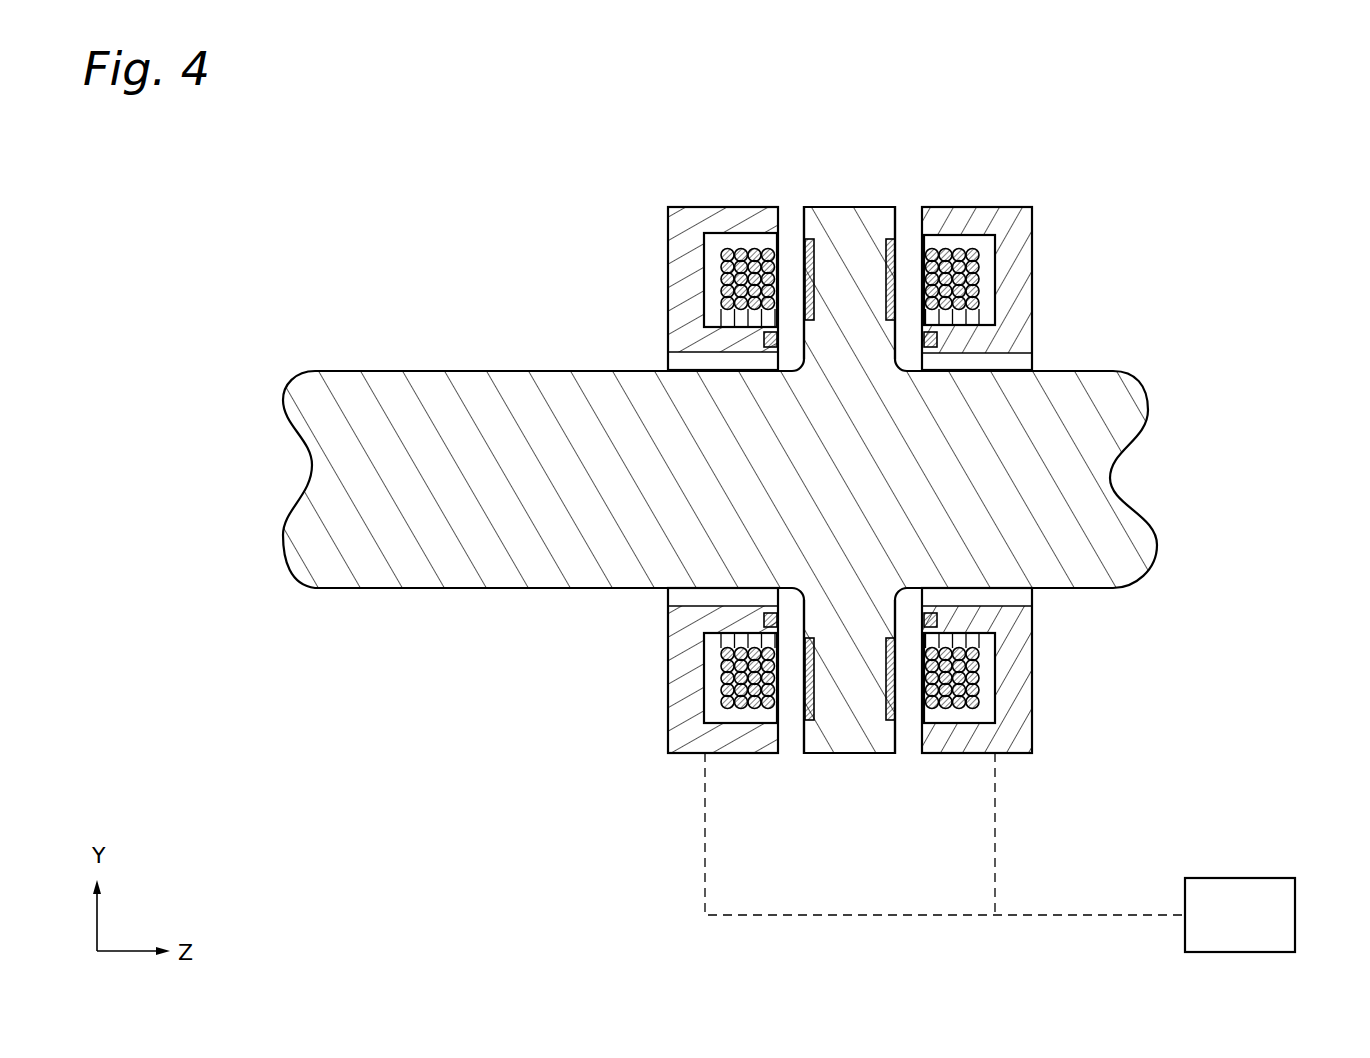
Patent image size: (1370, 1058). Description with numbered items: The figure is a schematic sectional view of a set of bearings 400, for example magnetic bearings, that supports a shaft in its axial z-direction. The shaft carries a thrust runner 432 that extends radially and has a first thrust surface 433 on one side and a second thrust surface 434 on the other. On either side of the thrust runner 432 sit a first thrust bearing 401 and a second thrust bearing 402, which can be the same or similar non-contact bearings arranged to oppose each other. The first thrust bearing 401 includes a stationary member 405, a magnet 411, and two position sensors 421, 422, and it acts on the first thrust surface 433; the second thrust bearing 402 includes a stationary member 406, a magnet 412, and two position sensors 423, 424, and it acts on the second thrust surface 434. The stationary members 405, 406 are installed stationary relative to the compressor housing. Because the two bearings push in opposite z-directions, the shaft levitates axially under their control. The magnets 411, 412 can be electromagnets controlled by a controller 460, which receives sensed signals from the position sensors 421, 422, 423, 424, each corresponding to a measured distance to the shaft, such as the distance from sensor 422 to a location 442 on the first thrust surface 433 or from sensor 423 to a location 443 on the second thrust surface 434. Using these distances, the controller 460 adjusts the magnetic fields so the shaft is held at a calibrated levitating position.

The set of bearings 400 is at (814, 512).
The first thrust bearing 401 is at (1035, 265).
The second thrust bearing 402 is at (682, 254).
The stationary member 405 is at (1033, 317).
The stationary member 406 is at (668, 313).
The magnet 411 is at (977, 273).
The magnet 412 is at (722, 275).
The position sensor 421 is at (937, 338).
The position sensor 422 is at (937, 619).
The position sensor 423 is at (764, 619).
The position sensor 424 is at (764, 338).
The thrust runner 432 is at (837, 207).
The first thrust surface 433 is at (898, 222).
The second thrust surface 434 is at (802, 218).
The location on the first thrust surface 442 is at (900, 590).
The location on the second thrust surface 443 is at (780, 590).
The controller 460 is at (1273, 878).